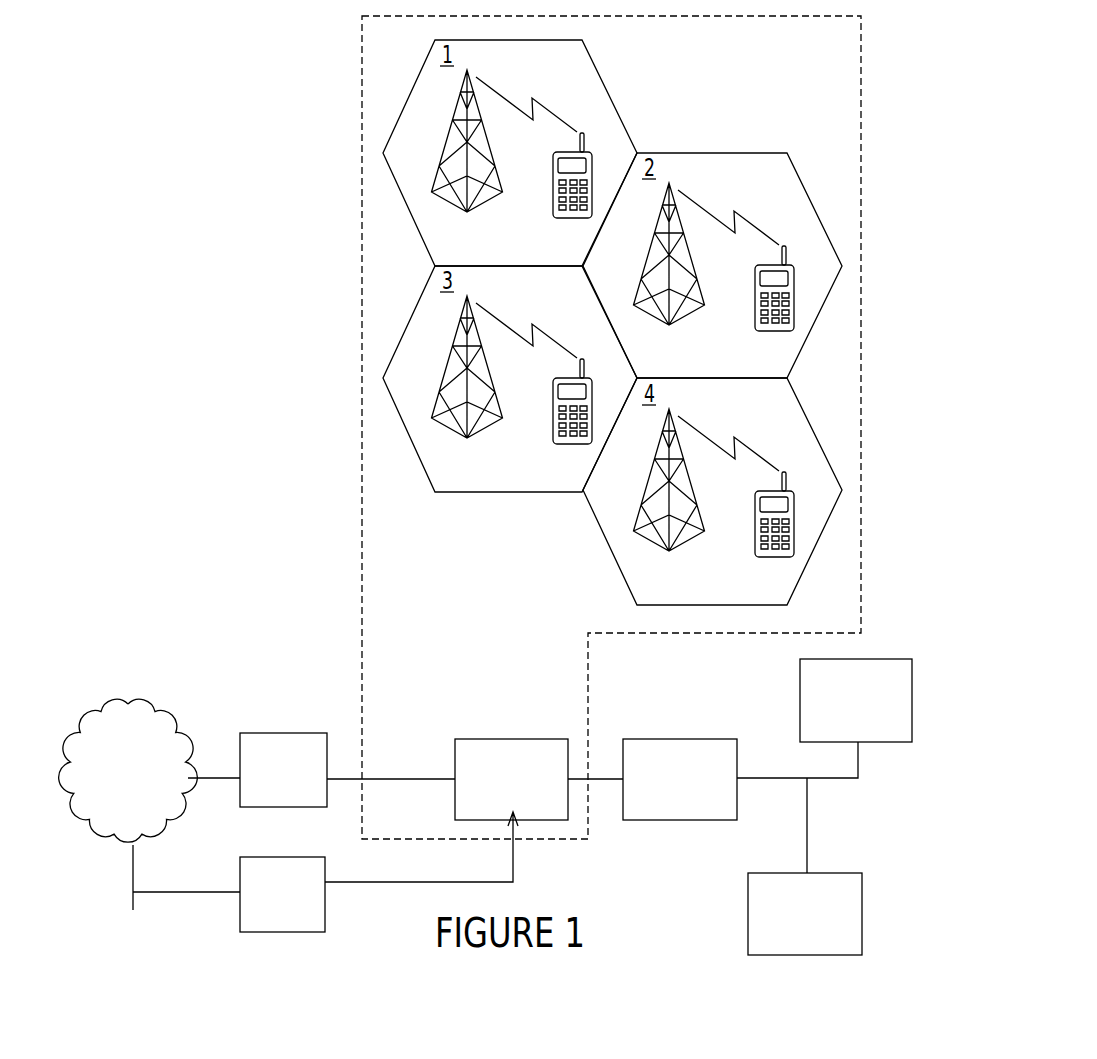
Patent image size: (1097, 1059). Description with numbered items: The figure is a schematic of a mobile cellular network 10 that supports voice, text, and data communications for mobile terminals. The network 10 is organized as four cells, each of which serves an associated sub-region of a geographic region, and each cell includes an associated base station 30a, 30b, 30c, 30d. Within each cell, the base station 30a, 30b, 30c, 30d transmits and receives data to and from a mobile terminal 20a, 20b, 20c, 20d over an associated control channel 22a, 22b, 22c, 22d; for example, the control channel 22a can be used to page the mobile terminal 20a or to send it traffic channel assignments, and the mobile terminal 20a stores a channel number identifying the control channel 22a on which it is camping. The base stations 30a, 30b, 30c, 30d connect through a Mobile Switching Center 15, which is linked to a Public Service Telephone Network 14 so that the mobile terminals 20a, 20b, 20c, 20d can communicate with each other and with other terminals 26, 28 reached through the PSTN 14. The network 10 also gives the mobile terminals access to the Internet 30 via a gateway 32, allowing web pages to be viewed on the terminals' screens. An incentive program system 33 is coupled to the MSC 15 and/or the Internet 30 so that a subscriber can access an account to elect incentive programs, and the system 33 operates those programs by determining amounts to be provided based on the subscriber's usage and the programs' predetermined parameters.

The mobile cellular network 10 is at (845, 53).
The base station 30a is at (467, 212).
The base station 30b is at (672, 278).
The base station 30c is at (470, 391).
The base station 30d is at (672, 504).
The control channel 22a is at (553, 120).
The control channel 22b is at (728, 227).
The control channel 22c is at (526, 340).
The control channel 22d is at (728, 453).
The mobile terminal 20a is at (553, 185).
The mobile terminal 20b is at (757, 292).
The mobile terminal 20c is at (555, 405).
The mobile terminal 20d is at (757, 518).
The Mobile Switching Center (MSC) 15 is at (523, 808).
The Public Service Telephone Network (PSTN) 14 is at (691, 808).
The terminal 26 is at (847, 709).
The terminal 28 is at (795, 924).
The Internet 30 is at (137, 798).
The gateway 32 is at (270, 797).
The incentive program system 33 is at (268, 910).